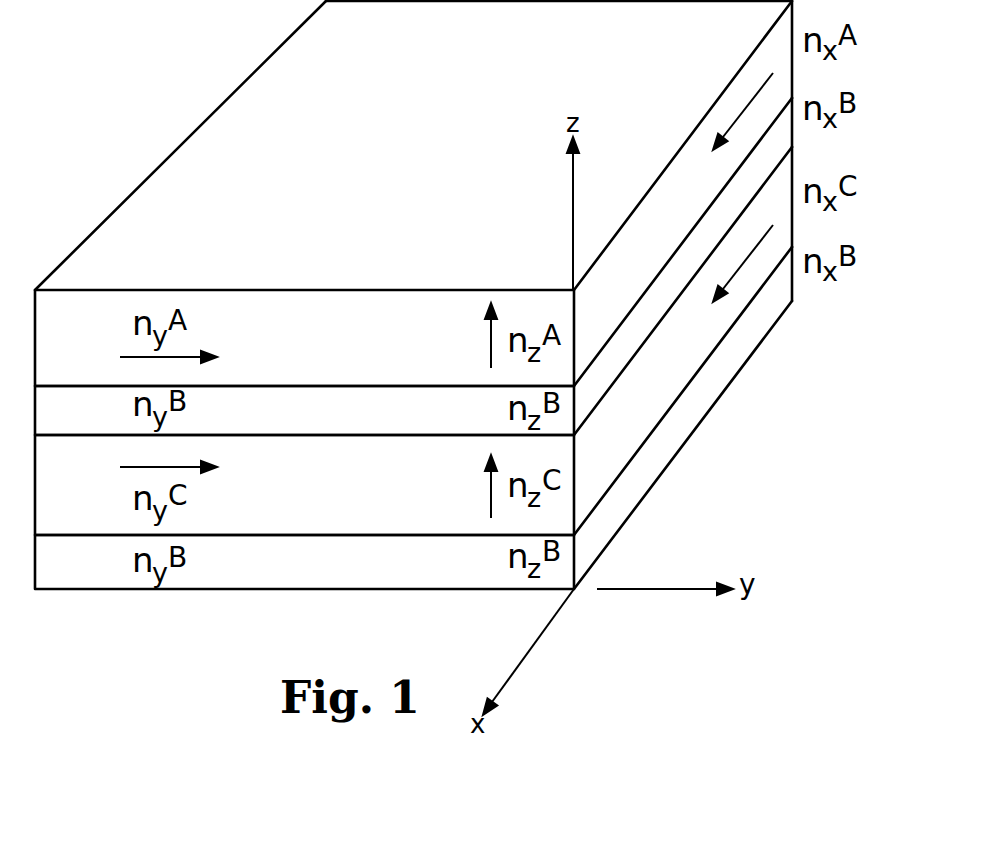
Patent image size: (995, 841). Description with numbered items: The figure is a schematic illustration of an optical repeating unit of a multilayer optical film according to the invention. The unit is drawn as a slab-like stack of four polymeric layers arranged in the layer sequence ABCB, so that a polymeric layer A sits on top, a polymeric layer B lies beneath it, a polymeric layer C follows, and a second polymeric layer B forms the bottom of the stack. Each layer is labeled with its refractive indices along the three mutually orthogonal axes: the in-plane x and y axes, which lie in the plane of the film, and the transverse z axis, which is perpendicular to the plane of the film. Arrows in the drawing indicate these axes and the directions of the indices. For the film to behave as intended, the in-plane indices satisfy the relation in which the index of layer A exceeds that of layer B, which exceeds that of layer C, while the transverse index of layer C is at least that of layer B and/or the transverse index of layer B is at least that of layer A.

The polymeric layer A is at (413, 193).
The polymeric layer B is at (413, 343).
The polymeric layer C is at (413, 341).